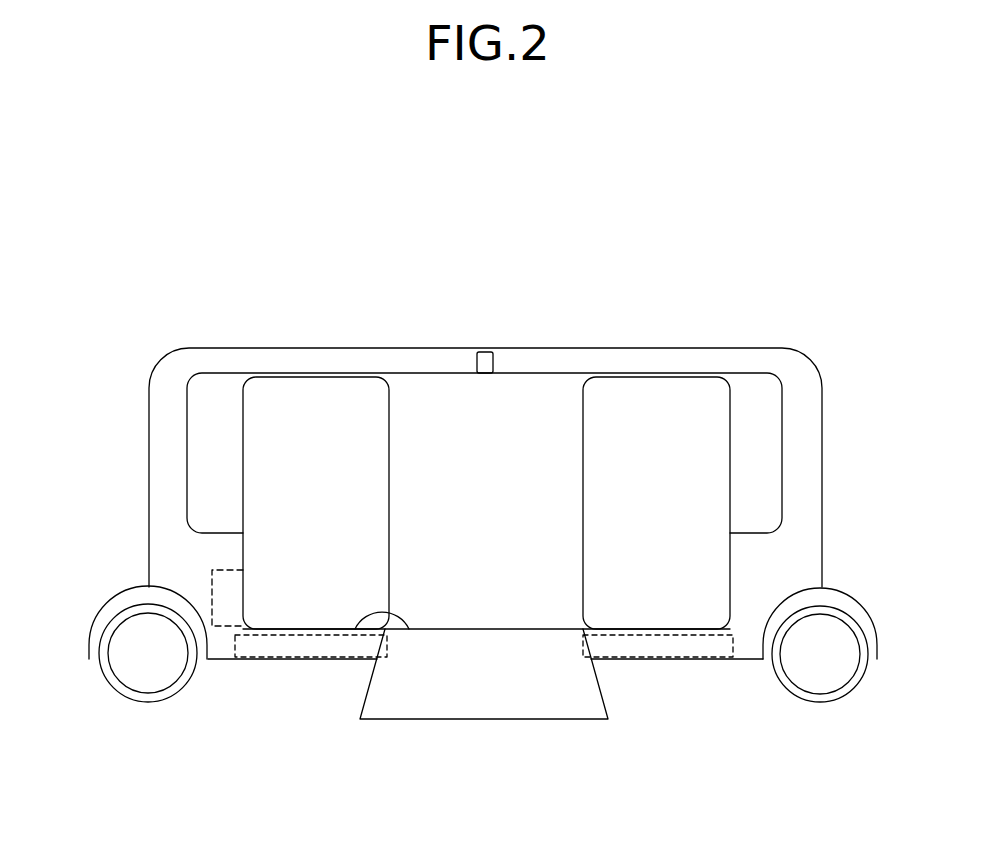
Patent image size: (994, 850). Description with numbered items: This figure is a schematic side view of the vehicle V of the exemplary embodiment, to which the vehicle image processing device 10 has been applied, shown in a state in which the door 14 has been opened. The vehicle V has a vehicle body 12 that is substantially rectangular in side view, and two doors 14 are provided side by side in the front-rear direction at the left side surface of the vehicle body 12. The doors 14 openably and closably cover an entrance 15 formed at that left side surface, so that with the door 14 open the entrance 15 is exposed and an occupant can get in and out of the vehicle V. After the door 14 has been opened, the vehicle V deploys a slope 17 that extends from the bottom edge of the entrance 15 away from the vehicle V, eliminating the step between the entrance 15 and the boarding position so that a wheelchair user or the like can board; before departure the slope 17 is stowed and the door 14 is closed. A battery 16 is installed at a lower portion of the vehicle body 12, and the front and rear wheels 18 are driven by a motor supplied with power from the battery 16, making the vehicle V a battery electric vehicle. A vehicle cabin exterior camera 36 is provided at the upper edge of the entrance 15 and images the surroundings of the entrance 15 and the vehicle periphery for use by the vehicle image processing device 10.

The vehicle V is at (177, 268).
The vehicle image processing device 10 is at (210, 587).
The vehicle body 12 is at (293, 348).
The door 14 is at (327, 373).
The entrance 15 is at (357, 634).
The battery 16 is at (670, 661).
The slope 17 is at (495, 719).
The wheels 18 is at (145, 707).
The vehicle cabin exterior camera 36 is at (493, 365).